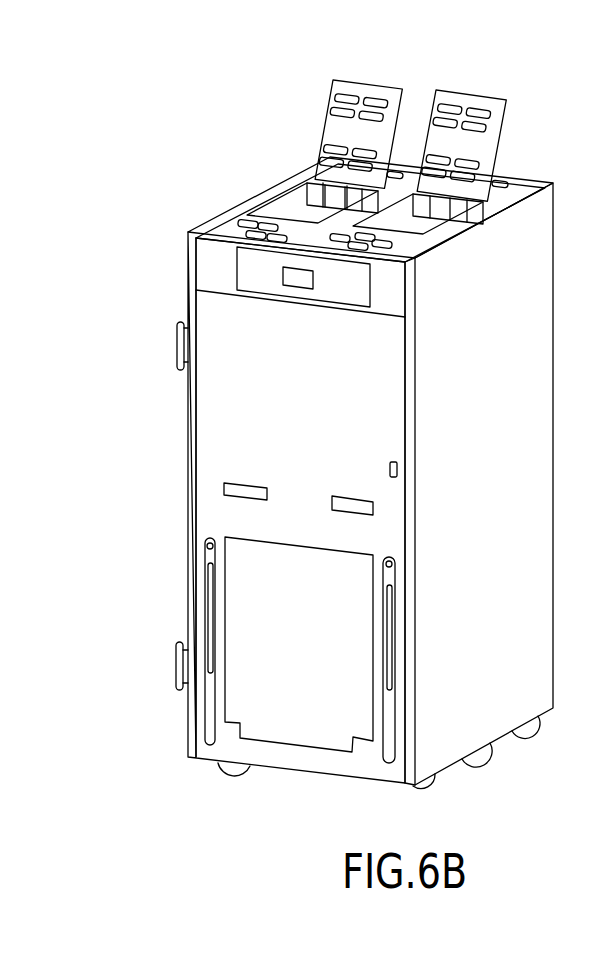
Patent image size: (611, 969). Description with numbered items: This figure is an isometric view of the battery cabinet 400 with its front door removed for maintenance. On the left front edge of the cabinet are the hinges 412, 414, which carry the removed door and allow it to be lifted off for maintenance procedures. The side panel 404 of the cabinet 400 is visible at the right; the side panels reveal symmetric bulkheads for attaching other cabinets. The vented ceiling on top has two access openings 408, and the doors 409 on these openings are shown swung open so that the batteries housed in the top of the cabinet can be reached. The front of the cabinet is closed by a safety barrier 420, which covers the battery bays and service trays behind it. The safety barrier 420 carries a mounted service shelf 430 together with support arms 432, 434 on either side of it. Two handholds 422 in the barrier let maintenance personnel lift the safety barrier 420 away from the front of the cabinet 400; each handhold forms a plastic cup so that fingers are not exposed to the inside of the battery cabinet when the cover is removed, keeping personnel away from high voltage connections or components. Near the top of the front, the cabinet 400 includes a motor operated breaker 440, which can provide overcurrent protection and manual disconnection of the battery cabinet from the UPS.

The battery cabinet 400 is at (365, 473).
The side panel 404 is at (535, 325).
The access opening 408 is at (300, 200).
The door 409 is at (480, 93).
The hinge 412 is at (177, 345).
The hinge 414 is at (177, 667).
The safety barrier 420 is at (220, 422).
The handhold 422 is at (225, 483).
The service shelf 430 is at (275, 730).
The support arm 432 is at (210, 558).
The support arm 434 is at (393, 574).
The motor operated breaker 440 is at (285, 275).